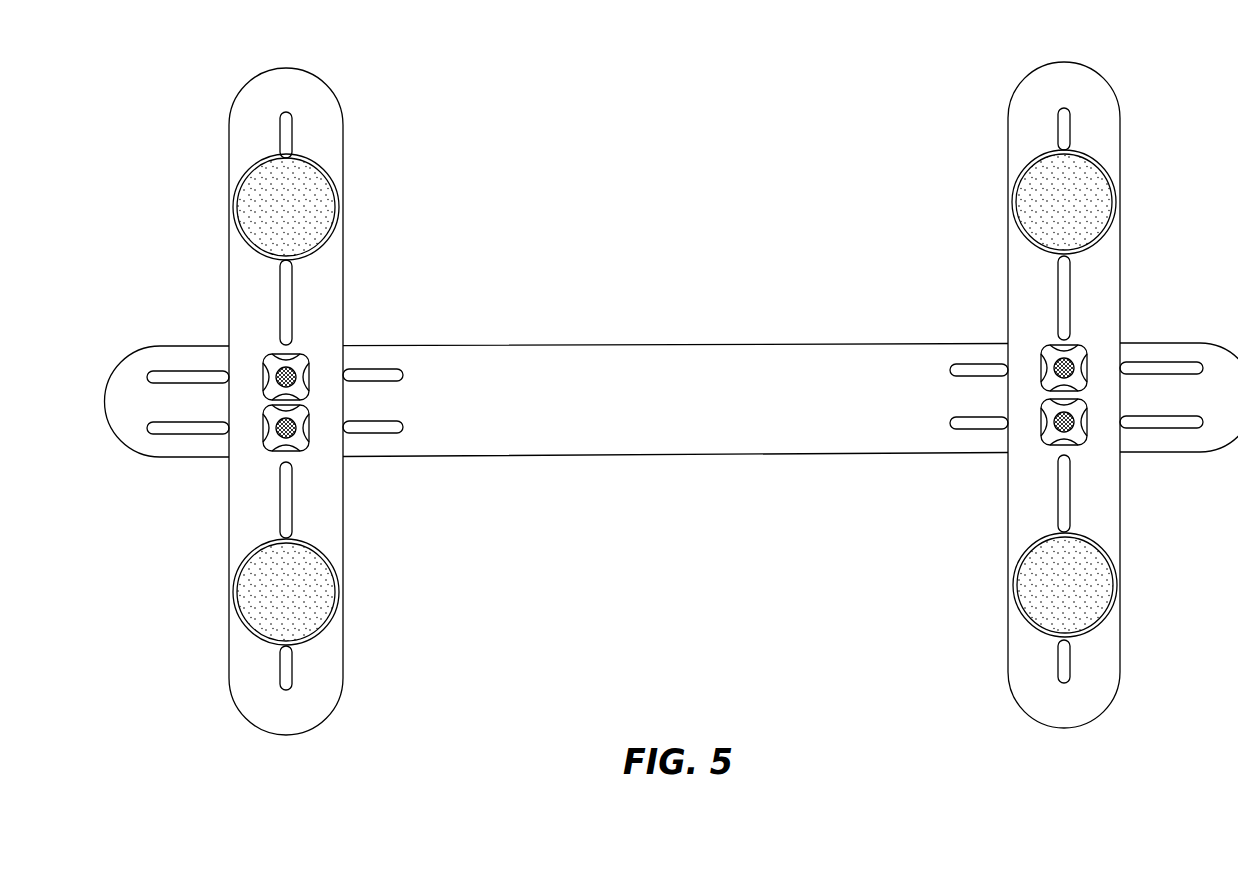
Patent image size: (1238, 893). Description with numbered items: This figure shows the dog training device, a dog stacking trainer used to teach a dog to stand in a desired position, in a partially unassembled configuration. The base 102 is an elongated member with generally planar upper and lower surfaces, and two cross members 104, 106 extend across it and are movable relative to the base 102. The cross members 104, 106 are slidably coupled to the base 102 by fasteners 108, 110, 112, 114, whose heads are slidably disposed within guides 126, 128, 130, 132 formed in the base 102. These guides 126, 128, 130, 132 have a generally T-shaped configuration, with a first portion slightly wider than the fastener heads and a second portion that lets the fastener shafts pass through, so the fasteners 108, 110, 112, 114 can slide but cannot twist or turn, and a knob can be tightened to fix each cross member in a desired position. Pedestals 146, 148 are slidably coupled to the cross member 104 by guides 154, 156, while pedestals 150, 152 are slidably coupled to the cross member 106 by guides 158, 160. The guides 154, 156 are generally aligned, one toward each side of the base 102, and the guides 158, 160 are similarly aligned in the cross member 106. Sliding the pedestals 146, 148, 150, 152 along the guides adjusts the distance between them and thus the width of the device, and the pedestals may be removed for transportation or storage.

The base 102 is at (698, 363).
The cross member 104 is at (329, 140).
The cross member 106 is at (1107, 103).
The fastener 108 is at (267, 442).
The fastener 110 is at (270, 357).
The fastener 112 is at (1087, 428).
The fastener 114 is at (1085, 345).
The guide 126 is at (390, 430).
The guide 128 is at (383, 372).
The guide 130 is at (970, 427).
The guide 132 is at (954, 350).
The pedestal 146 is at (252, 606).
The pedestal 148 is at (250, 183).
The pedestal 150 is at (1097, 593).
The pedestal 152 is at (1094, 210).
The guide 154 is at (293, 657).
The guide 156 is at (287, 290).
The guide 158 is at (1067, 652).
The guide 160 is at (1057, 132).